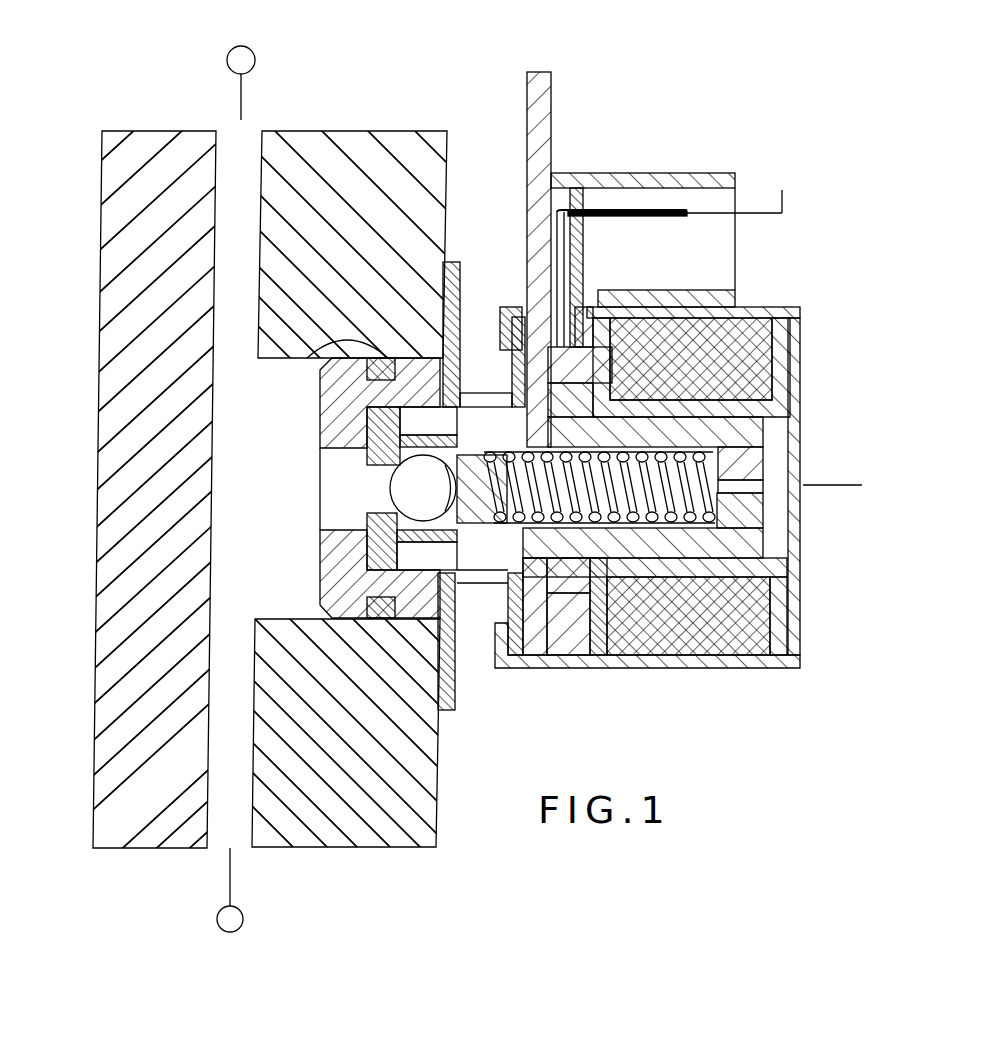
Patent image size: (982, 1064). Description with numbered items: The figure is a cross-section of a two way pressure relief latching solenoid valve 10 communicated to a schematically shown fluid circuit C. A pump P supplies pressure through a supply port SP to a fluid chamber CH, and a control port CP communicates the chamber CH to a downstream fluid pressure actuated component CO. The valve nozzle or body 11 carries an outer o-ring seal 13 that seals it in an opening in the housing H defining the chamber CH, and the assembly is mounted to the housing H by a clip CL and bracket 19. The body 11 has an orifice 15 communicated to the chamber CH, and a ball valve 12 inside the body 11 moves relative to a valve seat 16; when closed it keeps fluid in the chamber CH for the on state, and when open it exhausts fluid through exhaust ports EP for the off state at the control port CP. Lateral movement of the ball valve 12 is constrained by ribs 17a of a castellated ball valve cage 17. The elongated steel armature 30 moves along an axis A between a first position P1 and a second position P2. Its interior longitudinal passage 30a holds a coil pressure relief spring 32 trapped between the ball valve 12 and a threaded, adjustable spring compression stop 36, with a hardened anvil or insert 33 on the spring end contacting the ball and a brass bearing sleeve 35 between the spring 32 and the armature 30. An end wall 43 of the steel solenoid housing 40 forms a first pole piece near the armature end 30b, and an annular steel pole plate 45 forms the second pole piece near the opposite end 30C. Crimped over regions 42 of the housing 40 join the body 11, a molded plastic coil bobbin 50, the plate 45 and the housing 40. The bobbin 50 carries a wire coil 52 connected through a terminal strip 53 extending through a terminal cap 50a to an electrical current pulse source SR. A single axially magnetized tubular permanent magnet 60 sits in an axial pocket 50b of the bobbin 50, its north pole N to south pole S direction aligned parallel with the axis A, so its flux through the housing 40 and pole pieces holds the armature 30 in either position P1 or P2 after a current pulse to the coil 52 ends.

The pressure relief latching solenoid valve 10 is at (828, 158).
The valve nozzle or body 11 is at (335, 545).
The ball valve 12 is at (423, 488).
The outer o-ring seal 13 is at (325, 353).
The orifice 15 is at (330, 477).
The valve seat 16 is at (397, 503).
The castellated ball valve cage 17 is at (373, 422).
The ribs 17a is at (440, 432).
The bracket 19 is at (550, 106).
The armature 30 is at (735, 575).
The interior longitudinal passage 30a is at (622, 568).
The axial end of armature 30b is at (742, 545).
The opposite axial end of armature 30C is at (513, 580).
The pressure relief spring 32 is at (700, 448).
The anvil or insert 33 is at (505, 527).
The tubular bearing sleeve 35 is at (757, 462).
The spring compression stop 36 is at (768, 505).
The solenoid housing 40 is at (812, 302).
The crimped over regions 42 is at (470, 395).
The end wall (first pole piece) 43 is at (803, 372).
The pole piece plate 45 is at (535, 647).
The coil bobbin 50 is at (798, 652).
The terminal cap 50a is at (718, 173).
The axial pocket 50b is at (597, 292).
The wire coil 52 is at (760, 353).
The electrical terminal strip 53 is at (620, 212).
The permanent magnet 60 is at (580, 583).
The housing H is at (103, 178).
The fluid circuit C is at (160, 112).
The pump P is at (254, 52).
The supply port SP is at (250, 147).
The control port CP is at (218, 847).
The fluid pressure actuated component CO is at (243, 916).
The fluid chamber CH is at (256, 415).
The clip CL is at (470, 397).
The exhaust ports EP is at (486, 335).
The north pole N is at (546, 392).
The electrical current pulse source SR is at (746, 187).
The south pole S is at (691, 359).
The axis A is at (832, 466).
The first armature position P1 is at (425, 513).
The second armature position P2 is at (465, 513).